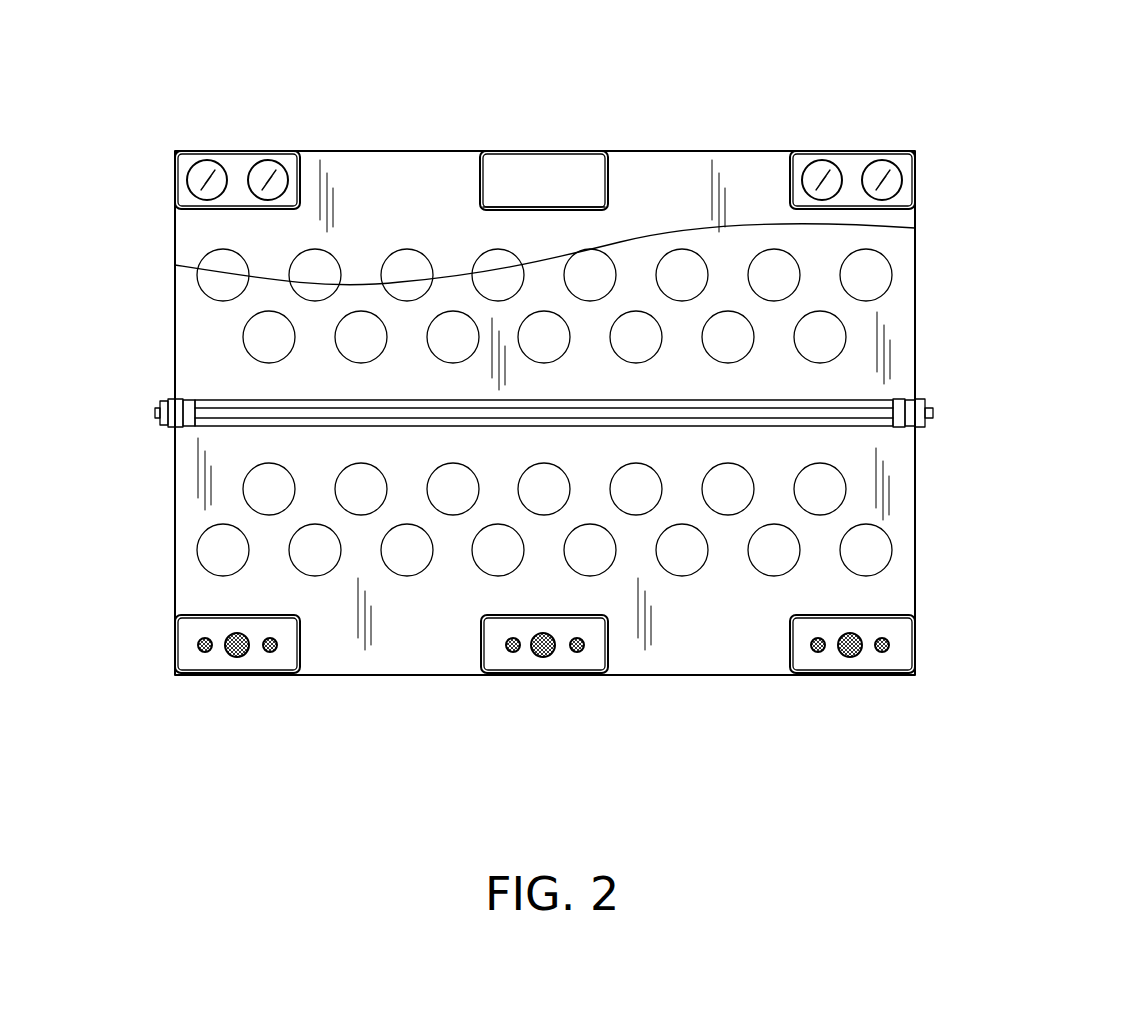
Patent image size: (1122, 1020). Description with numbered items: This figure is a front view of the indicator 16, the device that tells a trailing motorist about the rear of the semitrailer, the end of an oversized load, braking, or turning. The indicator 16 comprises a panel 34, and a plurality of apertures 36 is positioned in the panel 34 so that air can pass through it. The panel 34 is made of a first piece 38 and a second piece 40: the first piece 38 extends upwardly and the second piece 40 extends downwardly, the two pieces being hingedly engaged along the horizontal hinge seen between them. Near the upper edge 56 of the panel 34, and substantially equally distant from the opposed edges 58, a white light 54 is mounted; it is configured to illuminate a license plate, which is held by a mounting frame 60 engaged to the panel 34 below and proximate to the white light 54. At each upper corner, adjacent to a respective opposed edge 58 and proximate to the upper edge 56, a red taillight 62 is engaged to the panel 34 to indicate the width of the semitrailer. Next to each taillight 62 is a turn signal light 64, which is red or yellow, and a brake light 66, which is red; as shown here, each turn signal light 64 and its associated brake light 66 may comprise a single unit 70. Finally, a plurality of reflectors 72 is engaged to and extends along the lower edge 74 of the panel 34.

The indicator 16 is at (757, 151).
The panel 34 is at (218, 370).
The apertures 36 is at (683, 277).
The first piece 38 is at (175, 325).
The second piece 40 is at (175, 523).
The white light 54 is at (535, 152).
The upper edge 56 is at (680, 151).
The opposed edge 58 is at (915, 275).
The mounting frame 60 is at (557, 207).
The taillight 62 is at (205, 175).
The turn signal light 64 is at (267, 165).
The brake light 66 is at (252, 192).
The single unit 70 is at (278, 177).
The reflectors 72 is at (240, 650).
The lower edge 74 is at (383, 676).